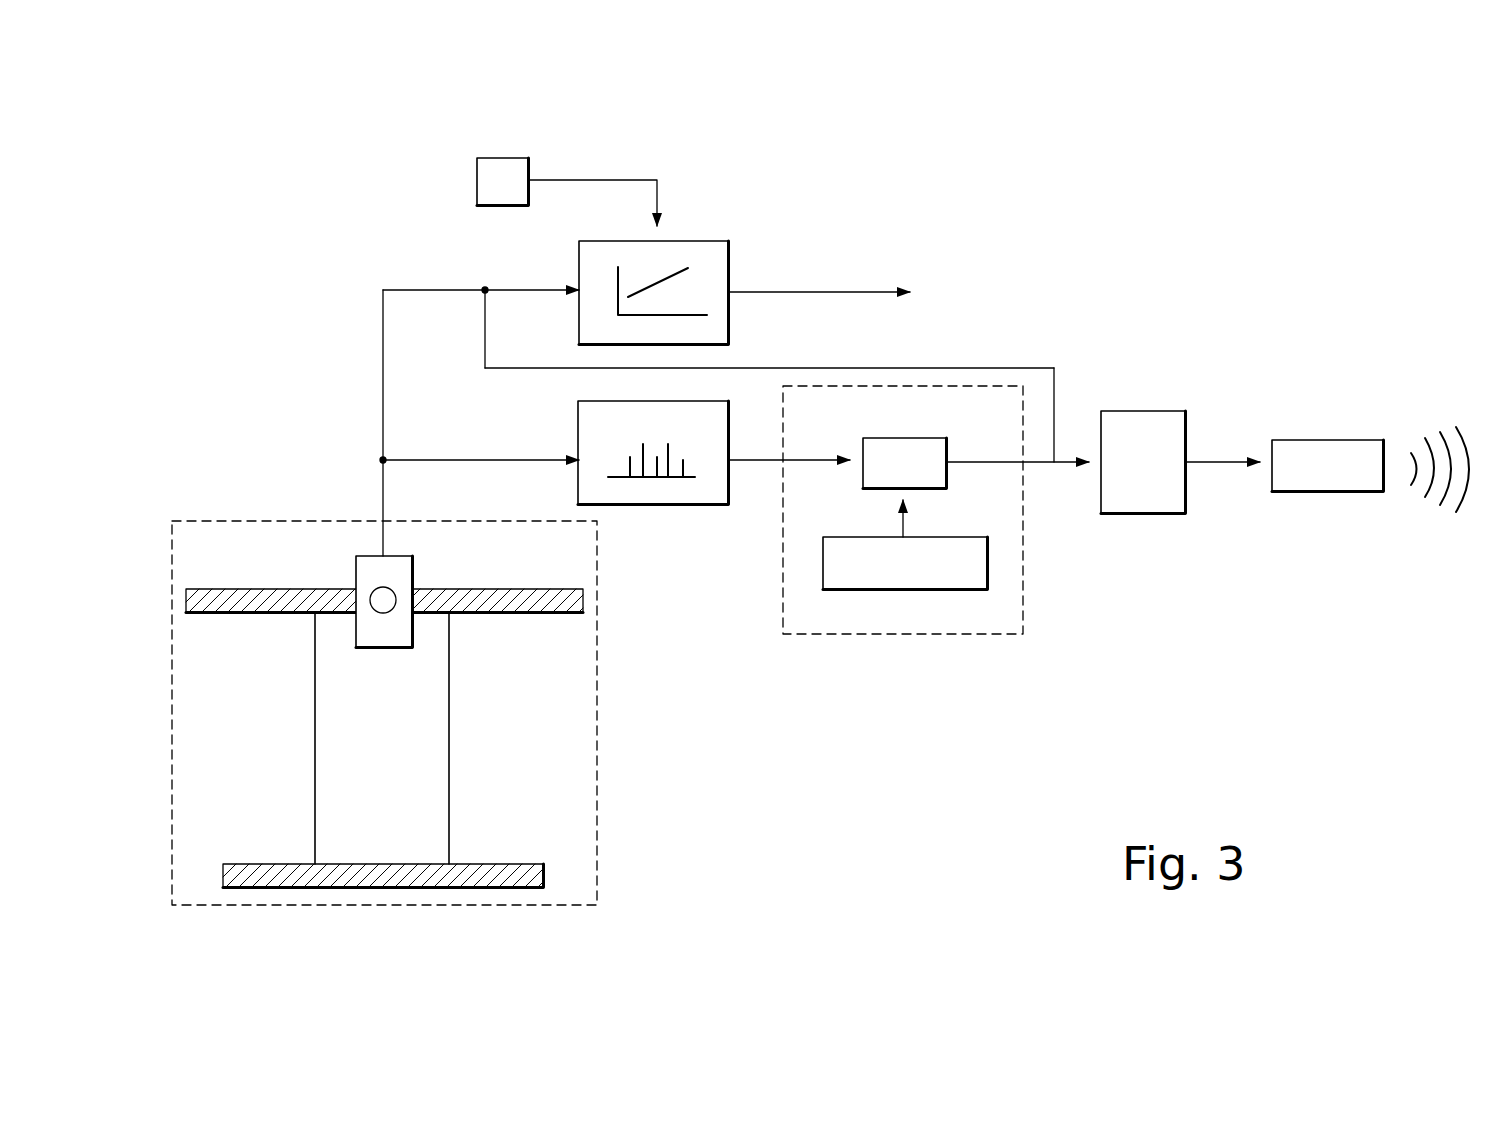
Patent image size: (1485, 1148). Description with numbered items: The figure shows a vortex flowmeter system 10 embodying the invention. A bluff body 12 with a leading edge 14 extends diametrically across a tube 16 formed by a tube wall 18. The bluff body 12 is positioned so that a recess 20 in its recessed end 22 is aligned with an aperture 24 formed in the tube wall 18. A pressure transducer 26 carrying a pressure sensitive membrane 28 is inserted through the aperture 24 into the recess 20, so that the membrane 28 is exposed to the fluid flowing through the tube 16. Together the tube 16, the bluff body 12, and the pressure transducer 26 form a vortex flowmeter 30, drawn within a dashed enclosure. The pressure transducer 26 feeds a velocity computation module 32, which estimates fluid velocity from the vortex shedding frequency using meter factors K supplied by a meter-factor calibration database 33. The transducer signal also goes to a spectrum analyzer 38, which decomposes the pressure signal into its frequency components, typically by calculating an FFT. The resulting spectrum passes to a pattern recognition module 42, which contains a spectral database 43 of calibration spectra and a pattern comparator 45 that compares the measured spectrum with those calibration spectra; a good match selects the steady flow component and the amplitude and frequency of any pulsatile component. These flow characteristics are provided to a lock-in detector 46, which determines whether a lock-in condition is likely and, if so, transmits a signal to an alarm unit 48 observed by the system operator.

The vortex flowmeter system 10 is at (1043, 212).
The bluff body 12 is at (397, 765).
The leading edge 14 is at (315, 708).
The tube 16 is at (265, 773).
The tube wall 18 is at (245, 864).
The recess 20 is at (356, 628).
The recessed end 22 is at (450, 660).
The aperture 24 is at (356, 590).
The pressure transducer 26 is at (400, 570).
The pressure sensitive membrane 28 is at (387, 600).
The vortex flowmeter 30 is at (597, 697).
The velocity computation module 32 is at (700, 241).
The meter-factor calibration database 33 is at (507, 158).
The spectrum analyzer 38 is at (680, 505).
The pattern recognition module 42 is at (920, 634).
The spectral database 43 is at (945, 537).
The pattern comparator 45 is at (946, 448).
The lock-in detector 46 is at (1186, 430).
The alarm unit 48 is at (1292, 440).